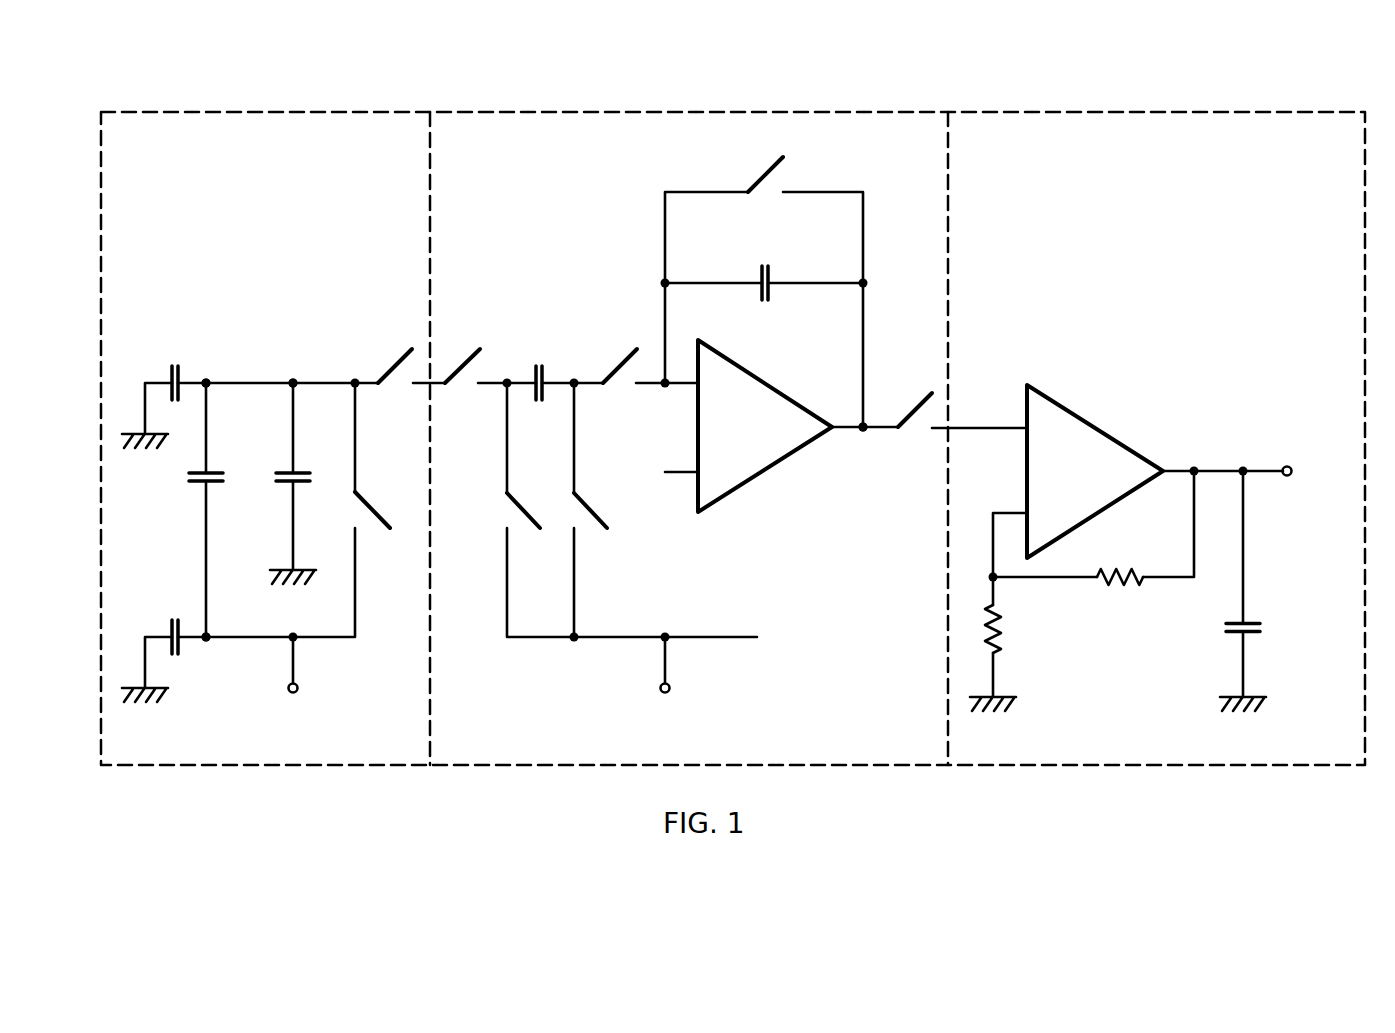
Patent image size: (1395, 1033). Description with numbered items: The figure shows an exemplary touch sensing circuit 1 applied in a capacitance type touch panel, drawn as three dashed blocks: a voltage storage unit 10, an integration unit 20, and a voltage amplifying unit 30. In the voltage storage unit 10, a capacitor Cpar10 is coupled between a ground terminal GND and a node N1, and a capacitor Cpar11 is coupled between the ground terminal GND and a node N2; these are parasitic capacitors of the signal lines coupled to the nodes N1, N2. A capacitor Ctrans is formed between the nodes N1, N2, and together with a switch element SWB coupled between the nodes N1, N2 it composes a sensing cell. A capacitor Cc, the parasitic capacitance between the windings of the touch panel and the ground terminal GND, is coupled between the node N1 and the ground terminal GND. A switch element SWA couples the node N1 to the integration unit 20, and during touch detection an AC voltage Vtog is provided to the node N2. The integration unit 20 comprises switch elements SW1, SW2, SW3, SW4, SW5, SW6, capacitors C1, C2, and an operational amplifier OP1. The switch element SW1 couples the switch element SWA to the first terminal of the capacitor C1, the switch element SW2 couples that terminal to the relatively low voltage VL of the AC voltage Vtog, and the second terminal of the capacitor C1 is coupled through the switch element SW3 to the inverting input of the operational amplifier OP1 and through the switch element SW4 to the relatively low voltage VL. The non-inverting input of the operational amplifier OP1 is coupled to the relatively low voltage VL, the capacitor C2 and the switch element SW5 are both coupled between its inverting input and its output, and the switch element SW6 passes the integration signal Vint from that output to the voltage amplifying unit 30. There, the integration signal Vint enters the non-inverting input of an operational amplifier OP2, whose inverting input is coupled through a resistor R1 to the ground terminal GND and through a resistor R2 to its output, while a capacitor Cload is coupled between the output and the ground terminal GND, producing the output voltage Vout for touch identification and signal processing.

The touch sensing circuit 1 is at (148, 71).
The voltage storage unit 10 is at (264, 112).
The integration unit 20 is at (691, 112).
The voltage amplifying unit 30 is at (1158, 112).
The capacitor Cpar10 is at (164, 368).
The capacitor Cpar11 is at (164, 623).
The node N1 is at (209, 386).
The node N2 is at (209, 640).
The capacitor Ctrans is at (226, 478).
The capacitor Cc is at (313, 478).
The switch element SWA is at (393, 350).
The switch element SWB is at (373, 508).
The AC voltage Vtog is at (298, 688).
The ground terminal GND is at (687, 591).
The switch element SW1 is at (459, 363).
The switch element SW2 is at (527, 508).
The switch element SW3 is at (610, 365).
The switch element SW4 is at (594, 508).
The switch element SW5 is at (765, 174).
The switch element SW6 is at (912, 407).
The capacitor C1 is at (537, 365).
The capacitor C2 is at (764, 265).
The operational amplifier OP1 is at (765, 472).
The integration signal Vint is at (880, 430).
The relatively low voltage VL is at (670, 688).
The operational amplifier OP2 is at (1096, 424).
The resistor R1 is at (1000, 618).
The resistor R2 is at (1107, 580).
The capacitor Cload is at (1261, 628).
The output voltage Vout is at (1321, 472).